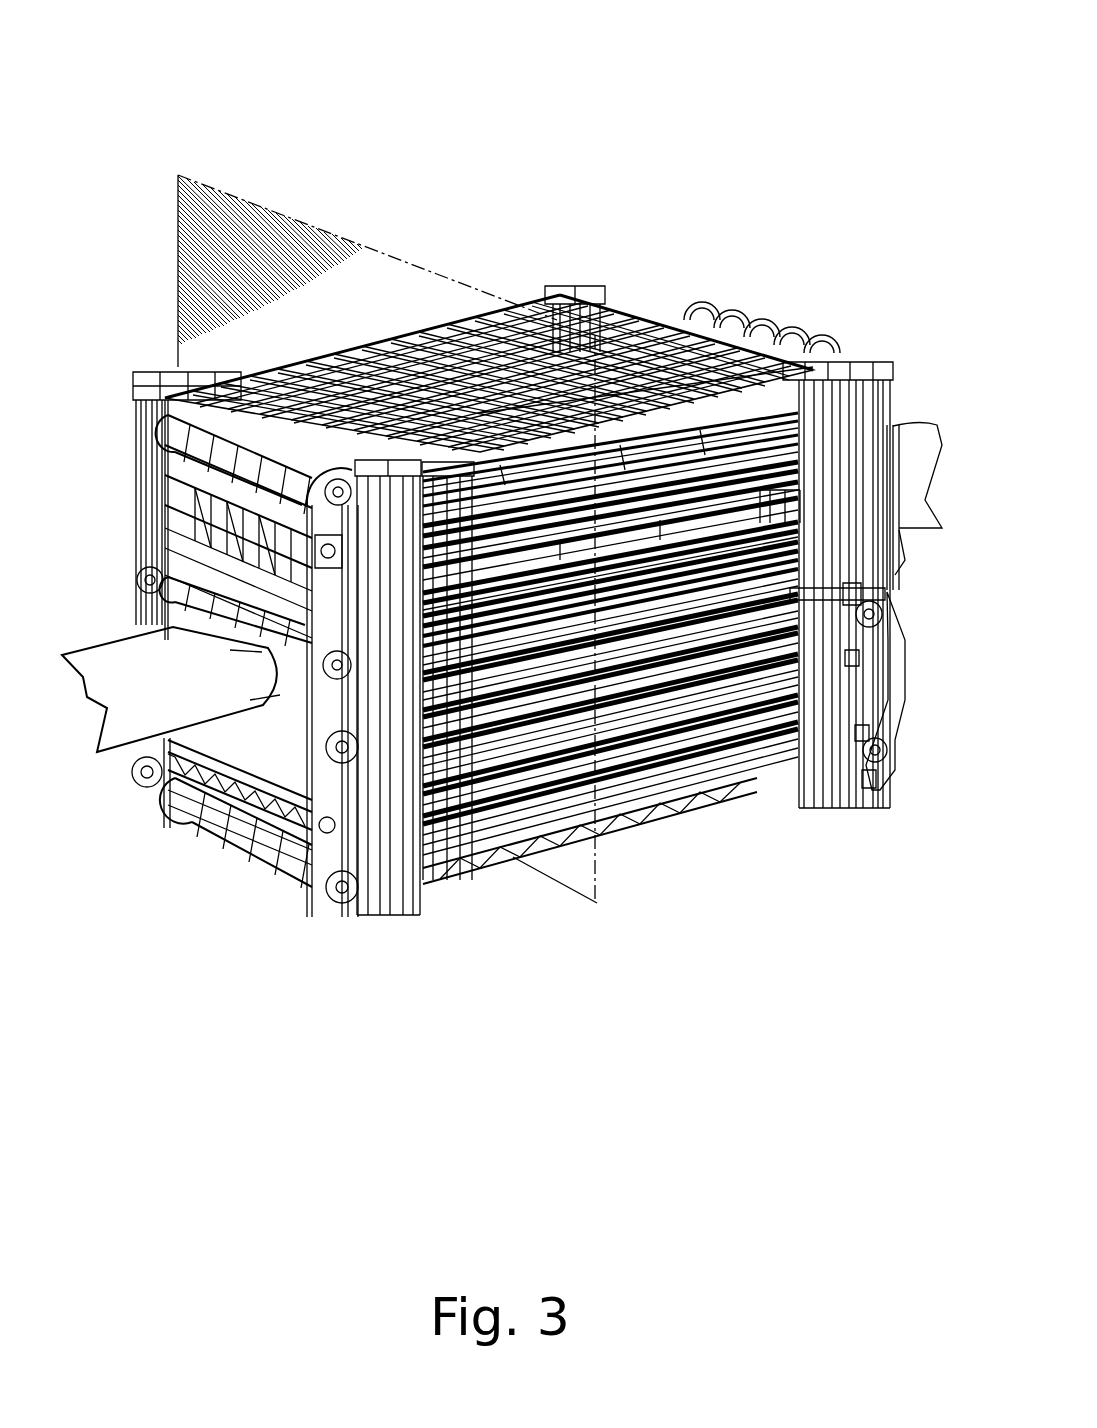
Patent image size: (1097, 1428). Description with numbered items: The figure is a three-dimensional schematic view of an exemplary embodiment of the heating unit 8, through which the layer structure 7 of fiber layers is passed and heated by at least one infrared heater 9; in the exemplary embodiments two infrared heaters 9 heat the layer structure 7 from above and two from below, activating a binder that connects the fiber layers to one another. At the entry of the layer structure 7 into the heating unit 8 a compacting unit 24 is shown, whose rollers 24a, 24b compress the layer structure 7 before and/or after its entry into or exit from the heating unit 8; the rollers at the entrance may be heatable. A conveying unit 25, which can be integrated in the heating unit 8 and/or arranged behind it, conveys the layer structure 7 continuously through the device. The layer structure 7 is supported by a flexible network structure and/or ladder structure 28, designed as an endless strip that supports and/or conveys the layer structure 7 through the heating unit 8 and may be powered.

The layer structure 7 is at (83, 640).
The heating unit 8 is at (773, 117).
The infrared heater 9 is at (152, 493).
The compacting unit 24 is at (128, 610).
The roller 24a is at (168, 810).
The roller 24b is at (220, 847).
The conveying unit 25 is at (354, 320).
The network structure and/or ladder structure 28 is at (483, 340).